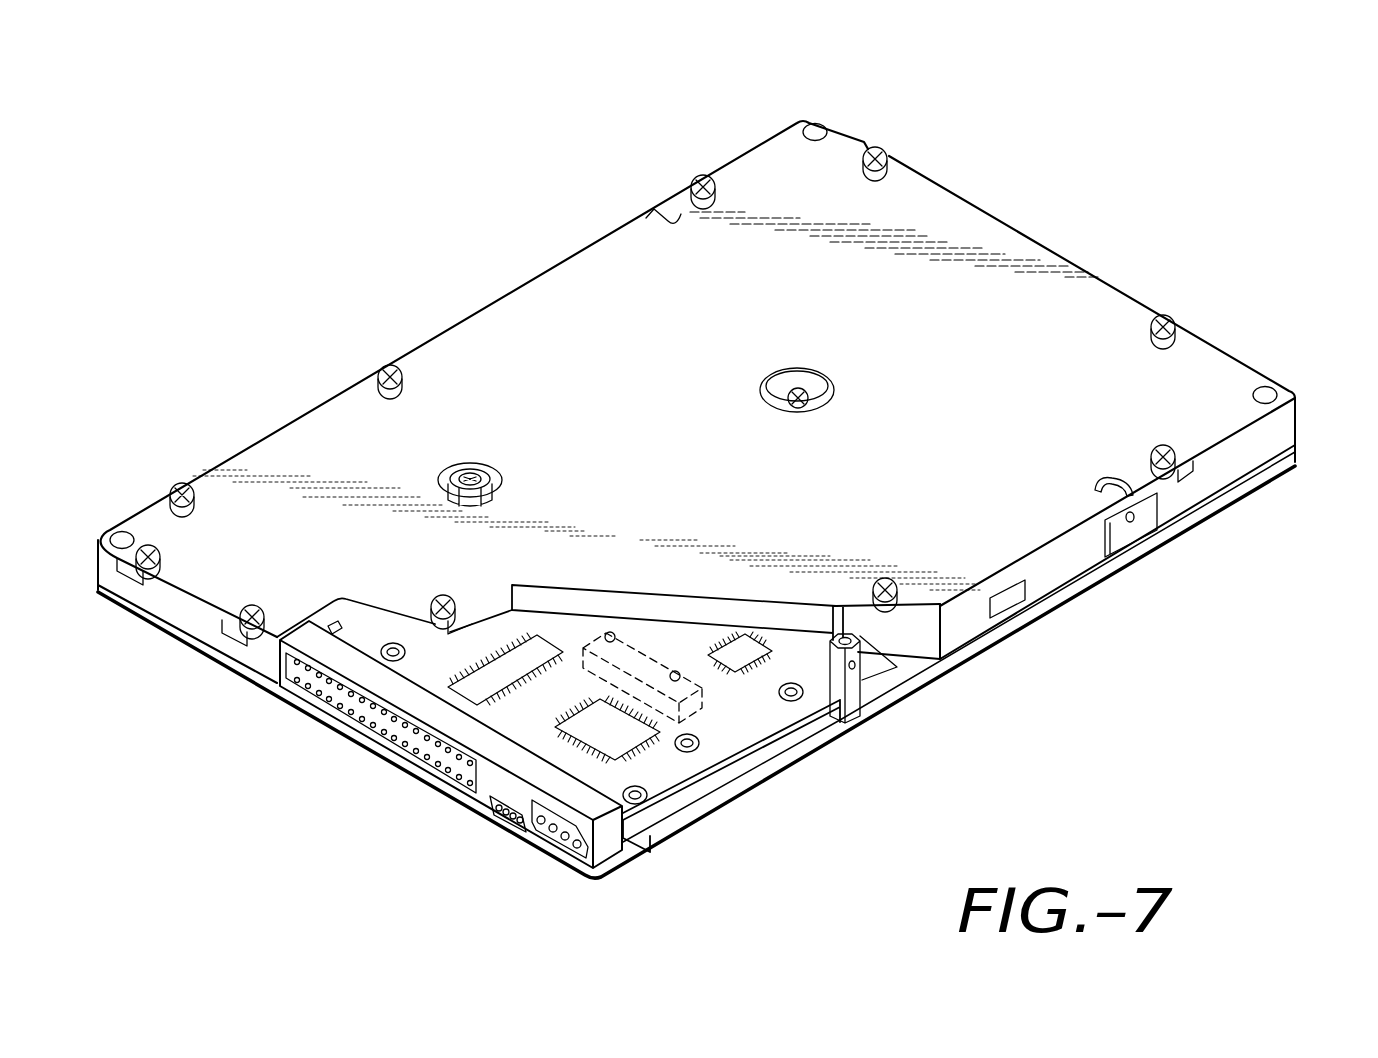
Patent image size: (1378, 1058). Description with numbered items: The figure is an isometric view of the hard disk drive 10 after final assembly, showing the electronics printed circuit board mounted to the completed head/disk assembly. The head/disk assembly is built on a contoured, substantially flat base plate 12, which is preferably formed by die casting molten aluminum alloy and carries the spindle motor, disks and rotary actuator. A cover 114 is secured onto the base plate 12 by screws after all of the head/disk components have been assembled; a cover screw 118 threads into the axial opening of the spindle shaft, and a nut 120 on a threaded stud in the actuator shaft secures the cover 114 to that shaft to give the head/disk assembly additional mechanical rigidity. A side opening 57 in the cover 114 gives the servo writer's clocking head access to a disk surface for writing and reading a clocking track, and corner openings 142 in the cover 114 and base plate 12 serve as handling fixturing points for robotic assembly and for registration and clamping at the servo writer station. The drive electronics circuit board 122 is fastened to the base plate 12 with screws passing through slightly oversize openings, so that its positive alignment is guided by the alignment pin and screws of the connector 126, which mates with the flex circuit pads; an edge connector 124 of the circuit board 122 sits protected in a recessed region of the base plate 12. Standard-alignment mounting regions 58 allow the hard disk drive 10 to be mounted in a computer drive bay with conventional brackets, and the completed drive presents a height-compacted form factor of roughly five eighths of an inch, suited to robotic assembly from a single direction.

The hard disk drive 10 is at (1065, 748).
The base plate 12 is at (910, 683).
The side opening 57 is at (1008, 600).
The standard-alignment mounting regions 58 is at (852, 668).
The cover 114 is at (1037, 259).
The cover screw 118 is at (810, 390).
The nut 120 is at (465, 479).
The drive electronics circuit board 122 is at (723, 745).
The edge connector 124 is at (603, 806).
The connector 126 is at (602, 680).
The corner openings 142 is at (817, 130).